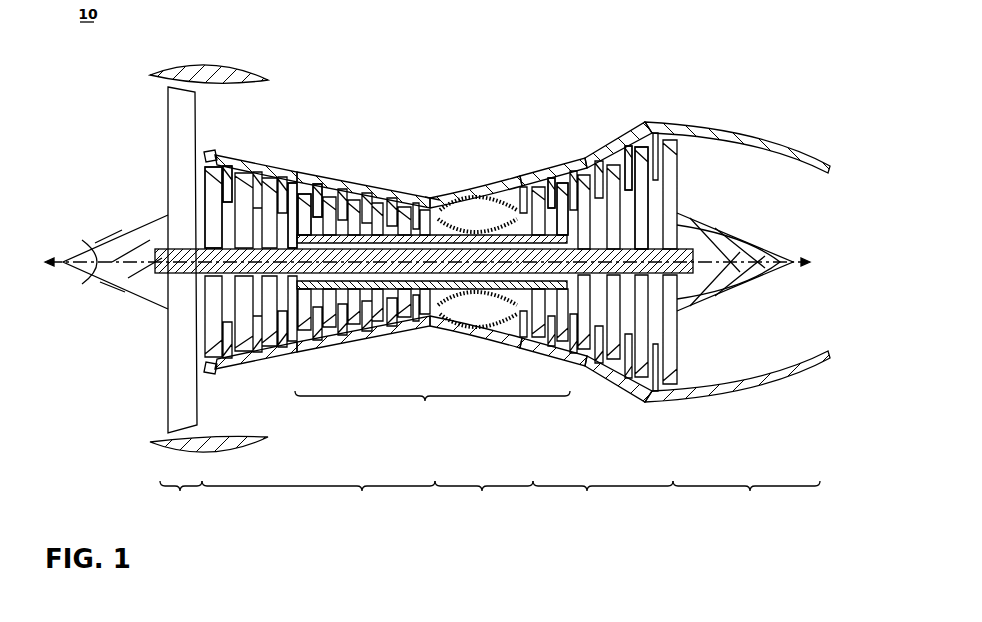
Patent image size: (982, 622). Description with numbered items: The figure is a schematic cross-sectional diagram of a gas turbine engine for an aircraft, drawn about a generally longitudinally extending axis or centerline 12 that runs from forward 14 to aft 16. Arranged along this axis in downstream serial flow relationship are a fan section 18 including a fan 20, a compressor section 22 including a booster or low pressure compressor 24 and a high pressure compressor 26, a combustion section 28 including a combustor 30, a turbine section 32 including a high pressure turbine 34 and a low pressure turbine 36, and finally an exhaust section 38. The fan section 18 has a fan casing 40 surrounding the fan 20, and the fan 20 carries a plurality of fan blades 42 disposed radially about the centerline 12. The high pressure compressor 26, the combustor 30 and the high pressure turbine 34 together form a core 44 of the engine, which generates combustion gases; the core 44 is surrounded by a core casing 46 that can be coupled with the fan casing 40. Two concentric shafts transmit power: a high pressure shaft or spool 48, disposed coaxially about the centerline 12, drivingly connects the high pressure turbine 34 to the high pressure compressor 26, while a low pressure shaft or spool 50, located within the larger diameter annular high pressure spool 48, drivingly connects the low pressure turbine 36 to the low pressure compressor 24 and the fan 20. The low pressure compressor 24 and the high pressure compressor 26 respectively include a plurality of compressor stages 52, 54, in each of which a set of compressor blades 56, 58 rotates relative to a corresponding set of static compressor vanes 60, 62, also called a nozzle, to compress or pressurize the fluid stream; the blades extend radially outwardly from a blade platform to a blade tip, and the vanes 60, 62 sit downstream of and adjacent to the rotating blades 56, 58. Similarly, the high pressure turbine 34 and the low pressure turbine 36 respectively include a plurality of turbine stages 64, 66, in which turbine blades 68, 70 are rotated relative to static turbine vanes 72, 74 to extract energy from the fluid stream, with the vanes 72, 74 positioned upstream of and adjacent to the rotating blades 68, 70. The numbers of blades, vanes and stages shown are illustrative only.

The centerline 12 is at (101, 256).
The forward 14 is at (37, 262).
The aft 16 is at (818, 262).
The fan section 18 is at (181, 495).
The fan 20 is at (164, 122).
The compressor section 22 is at (318, 495).
The low pressure compressor 24 is at (291, 356).
The high pressure compressor 26 is at (391, 335).
The combustion section 28 is at (484, 495).
The combustor 30 is at (511, 201).
The turbine section 32 is at (603, 495).
The high pressure turbine 34 is at (523, 354).
The low pressure turbine 36 is at (605, 385).
The exhaust section 38 is at (746, 495).
The fan casing 40 is at (213, 67).
The fan blades 42 is at (170, 398).
The core 44 is at (432, 408).
The core casing 46 is at (460, 185).
The high pressure spool 48 is at (432, 231).
The low pressure spool 50 is at (287, 247).
The compressor stages of the LP compressor 52 is at (205, 147).
The compressor stages of the HP compressor 54 is at (306, 168).
The compressor blades 56 is at (222, 168).
The compressor blades 58 is at (309, 191).
The static compressor vanes 60 is at (231, 173).
The static compressor vanes 62 is at (318, 200).
The turbine stages of the HP turbine 64 is at (541, 171).
The turbine stages of the LP turbine 66 is at (622, 129).
The turbine blades 68 is at (561, 199).
The turbine blades 70 is at (641, 165).
The static turbine vanes 72 is at (552, 194).
The static turbine vanes 74 is at (632, 160).